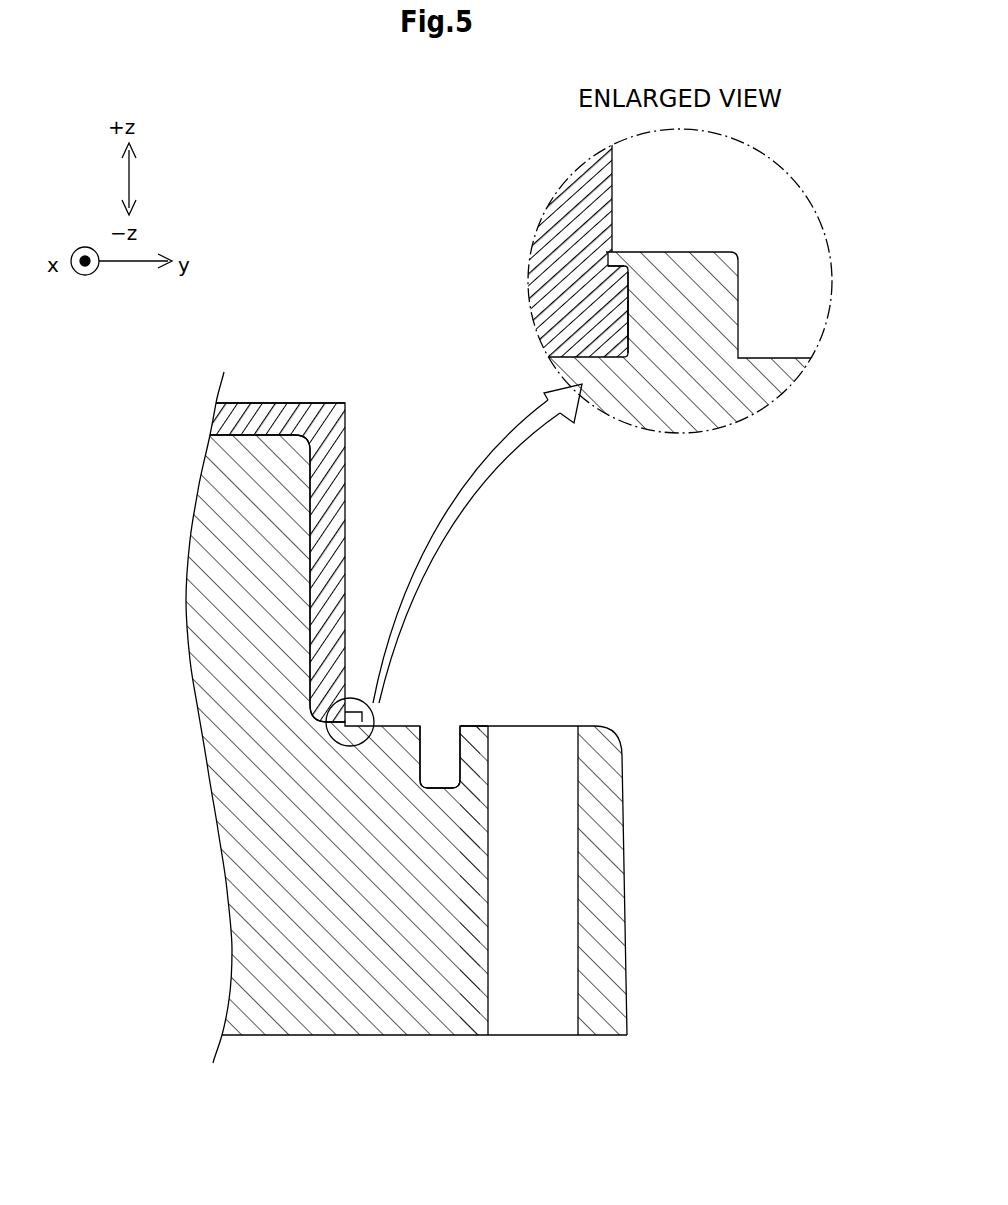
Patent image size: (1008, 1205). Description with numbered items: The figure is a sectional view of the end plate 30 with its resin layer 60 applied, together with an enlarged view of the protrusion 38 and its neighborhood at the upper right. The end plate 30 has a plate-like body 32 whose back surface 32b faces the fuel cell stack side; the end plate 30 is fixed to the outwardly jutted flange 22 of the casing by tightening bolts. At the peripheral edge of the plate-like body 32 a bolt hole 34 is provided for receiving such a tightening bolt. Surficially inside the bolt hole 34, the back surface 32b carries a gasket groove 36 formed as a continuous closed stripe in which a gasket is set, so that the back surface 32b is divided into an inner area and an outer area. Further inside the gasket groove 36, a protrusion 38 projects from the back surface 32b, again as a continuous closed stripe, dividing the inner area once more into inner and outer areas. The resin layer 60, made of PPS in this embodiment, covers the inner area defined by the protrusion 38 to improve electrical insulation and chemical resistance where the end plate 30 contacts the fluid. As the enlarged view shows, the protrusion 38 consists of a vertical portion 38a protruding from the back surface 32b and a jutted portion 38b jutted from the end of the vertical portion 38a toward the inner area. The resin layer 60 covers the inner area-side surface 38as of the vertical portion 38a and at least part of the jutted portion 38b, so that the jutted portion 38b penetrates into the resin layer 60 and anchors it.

The flange 22 is at (625, 836).
The end plate 30 is at (486, 591).
The plate-like body 32 is at (370, 686).
The back surface 32b is at (248, 434).
The bolt hole 34 is at (578, 762).
The gasket groove 36 is at (441, 762).
The protrusion 38 is at (352, 700).
The vertical portion 38a is at (636, 306).
The inner area-side surface 38as is at (628, 324).
The jutted portion 38b is at (615, 263).
The resin layer 60 is at (319, 403).